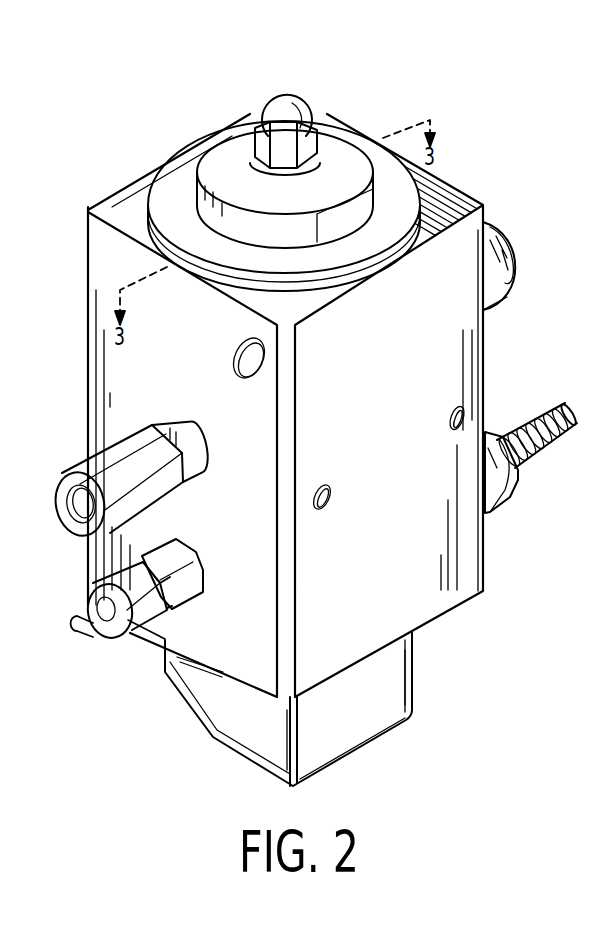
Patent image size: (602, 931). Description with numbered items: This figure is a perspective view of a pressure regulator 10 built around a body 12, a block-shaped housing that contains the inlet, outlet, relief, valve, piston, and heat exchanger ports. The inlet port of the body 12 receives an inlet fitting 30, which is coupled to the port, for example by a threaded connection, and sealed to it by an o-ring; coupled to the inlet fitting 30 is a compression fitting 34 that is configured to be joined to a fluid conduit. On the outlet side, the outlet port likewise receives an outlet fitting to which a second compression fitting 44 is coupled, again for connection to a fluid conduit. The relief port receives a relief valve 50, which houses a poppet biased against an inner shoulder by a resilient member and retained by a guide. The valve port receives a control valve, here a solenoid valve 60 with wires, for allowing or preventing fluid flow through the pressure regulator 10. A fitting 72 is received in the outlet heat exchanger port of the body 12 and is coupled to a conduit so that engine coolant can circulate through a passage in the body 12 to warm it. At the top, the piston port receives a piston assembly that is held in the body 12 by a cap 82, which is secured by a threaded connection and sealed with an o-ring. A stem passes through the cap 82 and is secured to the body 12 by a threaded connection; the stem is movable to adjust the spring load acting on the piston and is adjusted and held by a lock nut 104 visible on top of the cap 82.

The pressure regulator 10 is at (498, 120).
The body 12 is at (462, 352).
The inlet fitting 30 is at (200, 592).
The compression fitting 34 is at (88, 603).
The compression fitting 44 is at (512, 270).
The relief valve 50 is at (83, 462).
The solenoid valve 60 is at (390, 686).
The fitting 72 is at (566, 418).
The cap 82 is at (397, 193).
The lock nut 104 is at (298, 93).